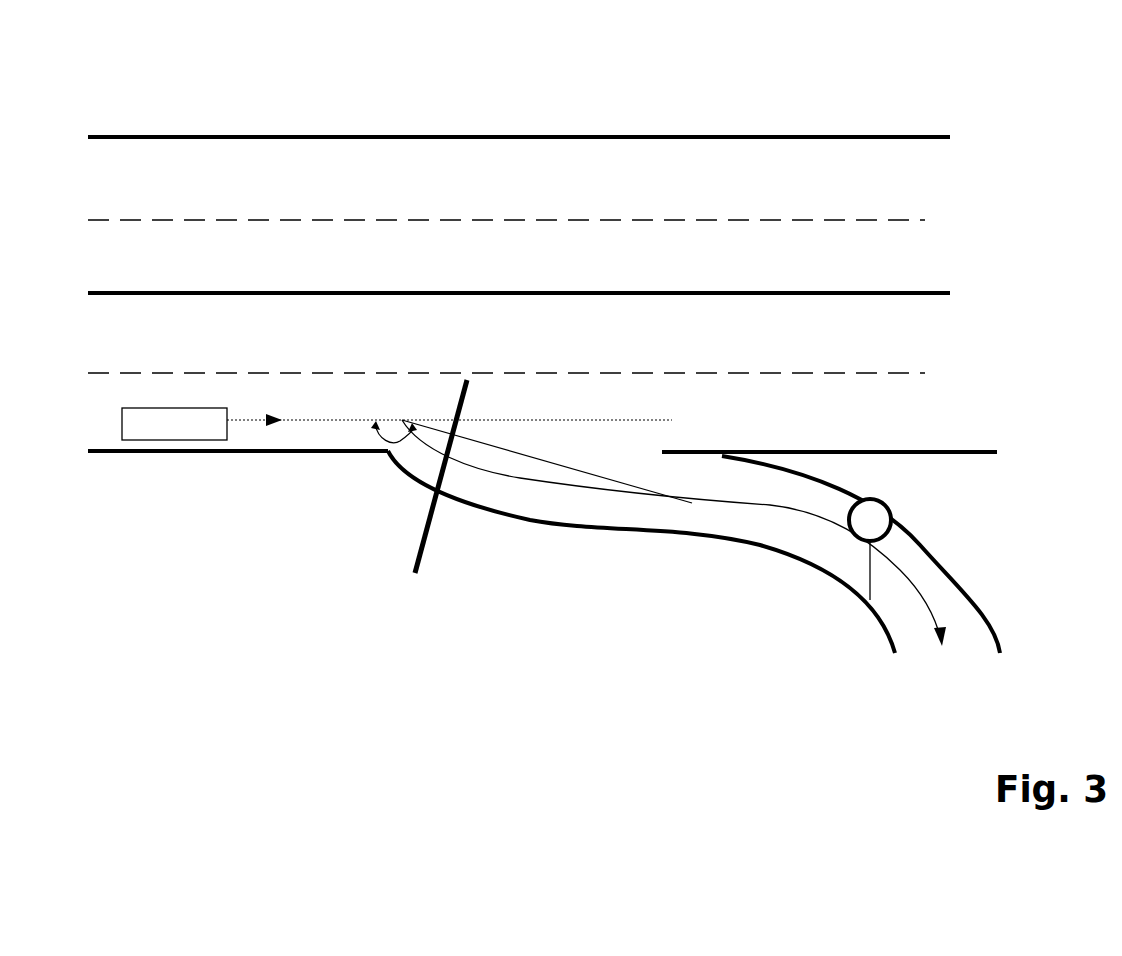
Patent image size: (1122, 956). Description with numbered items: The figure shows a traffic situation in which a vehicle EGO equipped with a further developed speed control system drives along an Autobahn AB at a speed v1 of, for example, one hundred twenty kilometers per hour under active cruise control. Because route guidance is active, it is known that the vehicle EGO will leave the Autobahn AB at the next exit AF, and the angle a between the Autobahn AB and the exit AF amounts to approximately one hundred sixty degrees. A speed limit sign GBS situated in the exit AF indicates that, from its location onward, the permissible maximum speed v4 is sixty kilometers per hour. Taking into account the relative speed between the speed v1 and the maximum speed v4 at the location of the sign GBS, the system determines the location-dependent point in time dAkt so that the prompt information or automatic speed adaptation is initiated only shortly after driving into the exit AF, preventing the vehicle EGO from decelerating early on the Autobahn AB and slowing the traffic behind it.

The Autobahn AB is at (645, 327).
The exit AF is at (927, 557).
The vehicle EGO is at (174, 424).
The speed v1 is at (449, 399).
The angle a is at (392, 452).
The location-dependent point in time dAkt is at (425, 548).
The permissible maximum speed v4 is at (674, 538).
The speed limit sign GBS is at (870, 597).